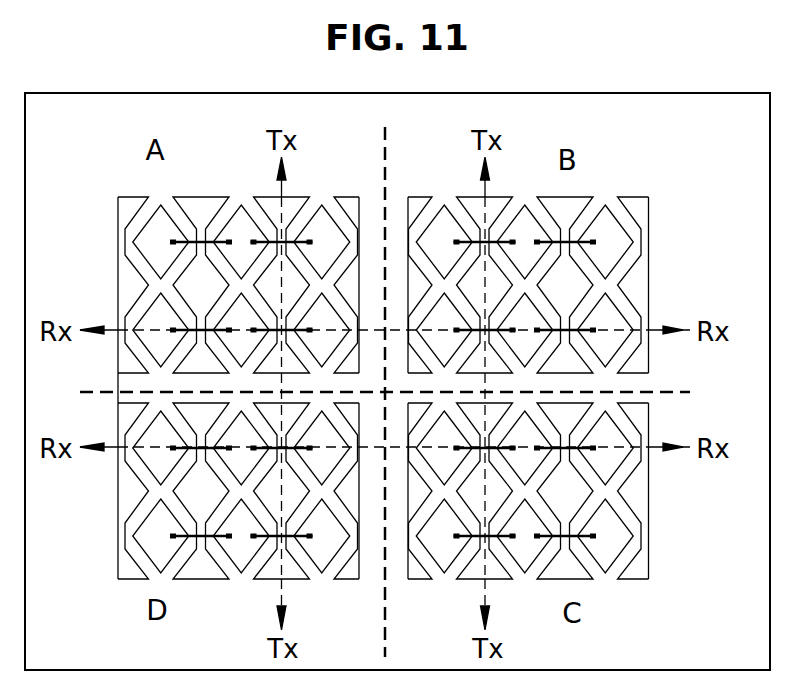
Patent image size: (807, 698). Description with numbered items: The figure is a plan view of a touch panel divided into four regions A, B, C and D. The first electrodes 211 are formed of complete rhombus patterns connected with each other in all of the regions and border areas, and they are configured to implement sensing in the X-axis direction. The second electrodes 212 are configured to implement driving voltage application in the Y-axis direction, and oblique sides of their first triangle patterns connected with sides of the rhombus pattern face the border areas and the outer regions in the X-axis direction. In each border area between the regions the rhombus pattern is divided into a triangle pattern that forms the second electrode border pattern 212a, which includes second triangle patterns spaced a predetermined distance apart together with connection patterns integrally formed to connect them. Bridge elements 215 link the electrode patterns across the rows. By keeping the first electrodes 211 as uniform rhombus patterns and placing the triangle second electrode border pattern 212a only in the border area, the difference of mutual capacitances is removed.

The first electrode 211 is at (606, 205).
The second electrode 212 is at (587, 282).
The second electrode border pattern 212a is at (643, 364).
The bridge electrode 215 is at (598, 240).